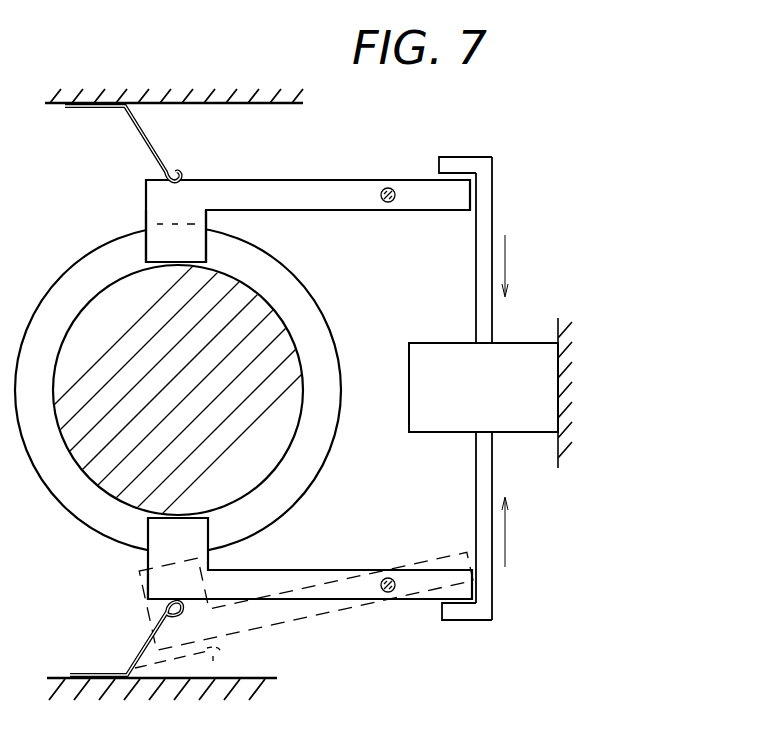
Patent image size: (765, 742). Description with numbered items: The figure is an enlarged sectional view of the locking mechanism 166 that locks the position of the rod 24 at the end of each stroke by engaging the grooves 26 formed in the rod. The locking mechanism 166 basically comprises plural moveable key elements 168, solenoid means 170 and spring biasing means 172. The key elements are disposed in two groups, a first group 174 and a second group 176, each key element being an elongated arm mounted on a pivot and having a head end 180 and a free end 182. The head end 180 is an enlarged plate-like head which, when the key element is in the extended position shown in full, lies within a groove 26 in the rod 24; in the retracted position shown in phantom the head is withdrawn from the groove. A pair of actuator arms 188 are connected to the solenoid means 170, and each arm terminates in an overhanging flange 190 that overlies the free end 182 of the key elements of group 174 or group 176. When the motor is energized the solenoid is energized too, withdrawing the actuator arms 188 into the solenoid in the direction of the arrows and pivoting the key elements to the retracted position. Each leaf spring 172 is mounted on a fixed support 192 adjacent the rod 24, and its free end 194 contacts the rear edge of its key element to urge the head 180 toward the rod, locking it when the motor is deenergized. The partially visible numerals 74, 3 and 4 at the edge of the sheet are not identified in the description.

The rod 24 is at (88, 466).
The grooves 26 is at (84, 518).
The locking mechanism 166 is at (430, 304).
The key elements 168 is at (265, 200).
The solenoid means 170 is at (432, 372).
The spring biasing means 172 is at (147, 138).
The first group of key elements 174 is at (330, 165).
The second group of key elements 176 is at (350, 568).
The head end 180 is at (163, 245).
The free end 182 is at (445, 199).
The actuator arms 188 is at (487, 310).
The overhanging flange 190 is at (462, 163).
The fixed support 192 is at (260, 103).
The free end of spring 194 is at (184, 176).
The frame member 74 is at (11, 251).
The frame member 3 is at (4, 351).
The frame member 4 is at (5, 616).